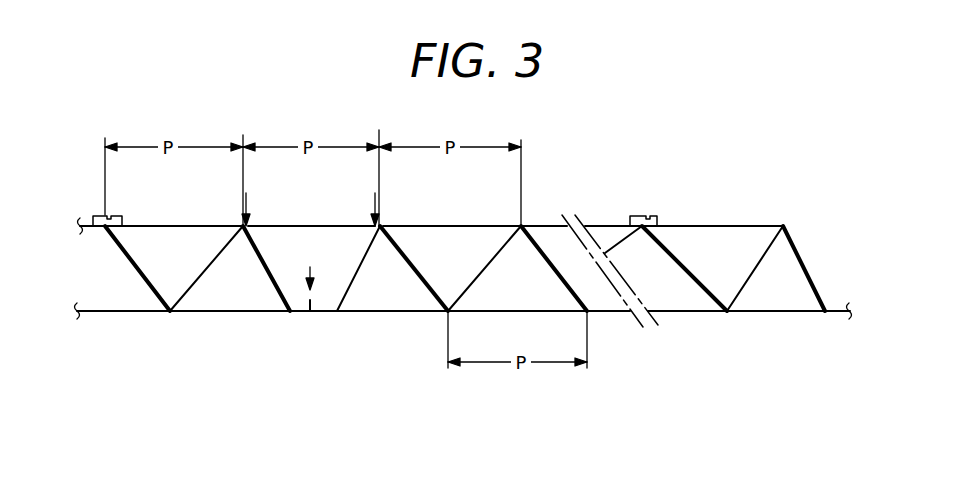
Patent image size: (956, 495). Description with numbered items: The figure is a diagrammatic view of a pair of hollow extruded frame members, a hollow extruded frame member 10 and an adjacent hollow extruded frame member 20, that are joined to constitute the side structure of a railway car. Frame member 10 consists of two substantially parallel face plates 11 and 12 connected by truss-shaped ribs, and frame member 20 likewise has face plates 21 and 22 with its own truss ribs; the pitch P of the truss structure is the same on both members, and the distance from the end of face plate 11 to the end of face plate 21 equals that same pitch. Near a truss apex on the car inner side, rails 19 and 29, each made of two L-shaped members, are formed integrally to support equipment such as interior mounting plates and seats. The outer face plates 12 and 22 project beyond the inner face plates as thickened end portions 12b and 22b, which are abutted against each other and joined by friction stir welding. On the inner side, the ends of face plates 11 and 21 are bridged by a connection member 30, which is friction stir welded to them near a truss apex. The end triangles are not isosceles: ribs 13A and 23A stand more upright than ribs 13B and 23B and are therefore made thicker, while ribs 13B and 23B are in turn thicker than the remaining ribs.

The hollow extruded frame member 10 is at (177, 385).
The face plate 11 is at (203, 226).
The face plate 12 is at (207, 311).
The end portion of face plate 12b is at (296, 311).
The rib 13A is at (267, 265).
The rib 13B is at (202, 284).
The rail 19 is at (122, 216).
The hollow extruded frame member 20 is at (574, 378).
The face plate 21 is at (450, 226).
The face plate 22 is at (400, 311).
The end portion of face plate 22b is at (323, 311).
The rib 23A is at (350, 281).
The rib 23B is at (410, 257).
The rail 29 is at (635, 216).
The connection member 30 is at (313, 226).